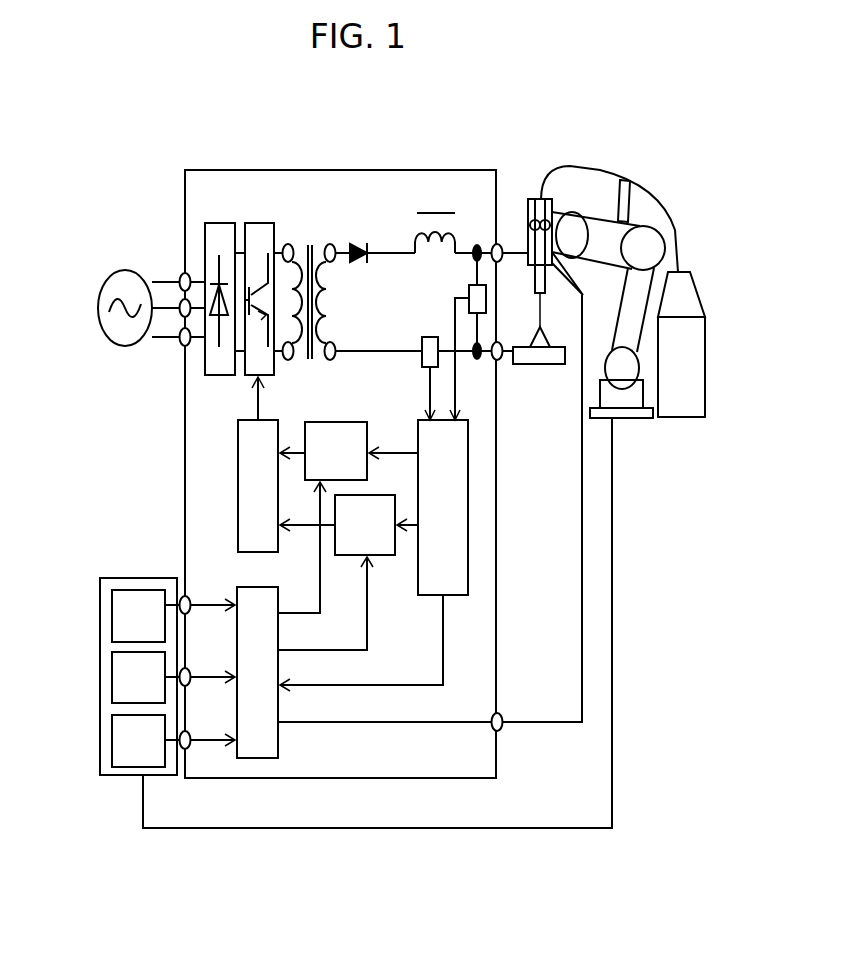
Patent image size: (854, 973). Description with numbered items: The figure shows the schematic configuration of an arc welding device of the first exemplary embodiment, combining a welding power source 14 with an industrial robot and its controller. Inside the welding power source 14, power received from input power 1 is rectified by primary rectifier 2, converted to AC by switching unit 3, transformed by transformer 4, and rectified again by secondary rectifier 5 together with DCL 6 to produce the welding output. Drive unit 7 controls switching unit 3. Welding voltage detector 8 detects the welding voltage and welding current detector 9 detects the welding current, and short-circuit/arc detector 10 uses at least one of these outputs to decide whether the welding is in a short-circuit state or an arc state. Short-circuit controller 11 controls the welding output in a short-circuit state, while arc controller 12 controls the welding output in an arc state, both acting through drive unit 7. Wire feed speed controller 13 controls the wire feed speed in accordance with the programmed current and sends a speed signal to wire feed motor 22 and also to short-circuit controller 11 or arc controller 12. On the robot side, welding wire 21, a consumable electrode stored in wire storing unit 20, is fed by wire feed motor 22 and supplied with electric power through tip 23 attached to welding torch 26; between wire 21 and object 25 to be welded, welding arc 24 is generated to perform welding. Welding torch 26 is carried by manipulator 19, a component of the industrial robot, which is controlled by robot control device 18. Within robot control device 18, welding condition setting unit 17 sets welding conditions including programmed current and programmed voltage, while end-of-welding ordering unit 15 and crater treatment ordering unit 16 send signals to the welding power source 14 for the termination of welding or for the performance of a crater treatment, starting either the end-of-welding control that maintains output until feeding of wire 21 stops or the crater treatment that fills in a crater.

The input power 1 is at (127, 272).
The primary rectifier 2 is at (223, 222).
The switching unit 3 is at (260, 222).
The transformer 4 is at (308, 243).
The secondary rectifier 5 is at (357, 240).
The DCL 6 is at (430, 205).
The drive unit 7 is at (238, 477).
The welding voltage detector 8 is at (475, 285).
The welding current detector 9 is at (430, 337).
The short-circuit/arc detector 10 is at (468, 513).
The short-circuit controller 11 is at (303, 427).
The arc controller 12 is at (335, 550).
The wire feed speed controller 13 is at (258, 760).
The welding power source 14 is at (197, 169).
The end-of-welding ordering unit 15 is at (112, 615).
The crater treatment ordering unit 16 is at (112, 675).
The welding condition setting unit 17 is at (112, 735).
The robot control device 18 is at (140, 578).
The manipulator 19 is at (618, 372).
The wire storing unit 20 is at (685, 377).
The welding wire 21 is at (588, 173).
The wire feed motor 22 is at (532, 245).
The tip 23 is at (555, 262).
The welding arc 24 is at (543, 340).
The object to be welded 25 is at (543, 357).
The welding torch 26 is at (533, 250).